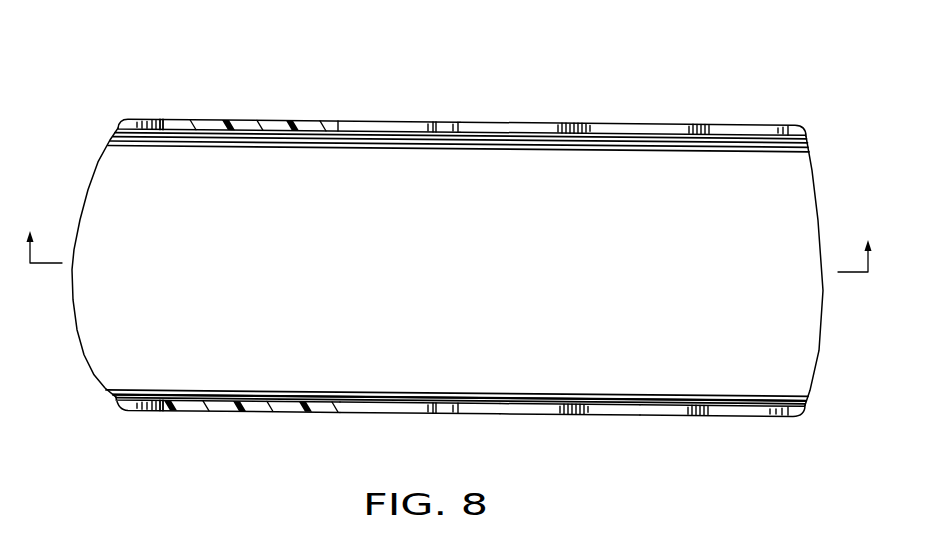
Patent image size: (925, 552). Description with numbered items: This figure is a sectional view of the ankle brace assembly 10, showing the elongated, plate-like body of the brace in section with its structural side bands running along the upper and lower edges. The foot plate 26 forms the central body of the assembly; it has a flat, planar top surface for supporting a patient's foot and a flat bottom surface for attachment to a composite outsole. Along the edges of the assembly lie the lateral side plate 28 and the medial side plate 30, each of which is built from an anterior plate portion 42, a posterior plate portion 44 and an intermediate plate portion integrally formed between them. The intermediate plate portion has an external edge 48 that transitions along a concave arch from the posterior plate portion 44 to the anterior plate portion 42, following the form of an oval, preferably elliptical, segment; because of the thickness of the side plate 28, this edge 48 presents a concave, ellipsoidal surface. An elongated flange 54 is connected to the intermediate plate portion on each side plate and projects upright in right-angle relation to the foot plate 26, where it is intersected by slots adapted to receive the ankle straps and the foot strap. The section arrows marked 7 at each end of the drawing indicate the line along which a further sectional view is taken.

The ankle brace assembly 10 is at (125, 82).
The foot plate 26 is at (603, 203).
The medial side plate 30 is at (378, 126).
The elongated flange 54 is at (510, 128).
The posterior plate portion 44 is at (188, 409).
The external edge 48 is at (377, 407).
The lateral side plate 28 is at (503, 417).
The anterior plate portion 42 is at (748, 418).
The section line 7- 7 is at (448, 242).